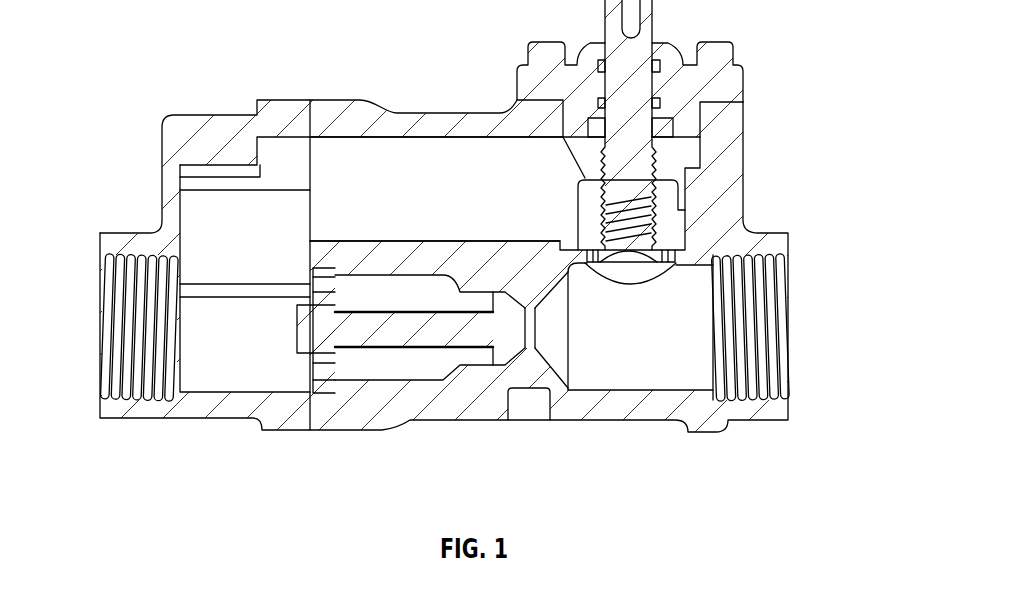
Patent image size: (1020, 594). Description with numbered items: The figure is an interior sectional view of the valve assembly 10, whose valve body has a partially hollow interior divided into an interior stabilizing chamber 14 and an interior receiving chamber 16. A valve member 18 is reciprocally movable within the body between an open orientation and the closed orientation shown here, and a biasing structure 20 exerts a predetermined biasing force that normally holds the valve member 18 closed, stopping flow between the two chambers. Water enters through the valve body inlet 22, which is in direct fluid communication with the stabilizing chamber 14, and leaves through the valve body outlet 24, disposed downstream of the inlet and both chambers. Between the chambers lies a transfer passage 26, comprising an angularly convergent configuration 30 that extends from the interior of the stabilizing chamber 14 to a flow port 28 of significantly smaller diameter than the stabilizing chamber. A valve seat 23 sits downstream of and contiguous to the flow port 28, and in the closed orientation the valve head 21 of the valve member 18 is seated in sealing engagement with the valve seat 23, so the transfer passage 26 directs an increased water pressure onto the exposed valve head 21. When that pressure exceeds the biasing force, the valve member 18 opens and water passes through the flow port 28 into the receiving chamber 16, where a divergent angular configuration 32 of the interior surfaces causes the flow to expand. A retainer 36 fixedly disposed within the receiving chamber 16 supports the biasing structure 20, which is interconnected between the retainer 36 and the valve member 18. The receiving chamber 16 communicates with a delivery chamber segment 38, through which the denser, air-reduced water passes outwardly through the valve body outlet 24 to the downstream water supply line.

The valve assembly 10 is at (866, 92).
The interior stabilizing chamber 14 is at (657, 363).
The interior receiving chamber 16 is at (397, 368).
The valve member 18 is at (417, 327).
The biasing structure 20 is at (362, 323).
The valve head 21 is at (500, 343).
The valve body inlet 22 is at (787, 330).
The valve seat 23 is at (517, 357).
The valve body outlet 24 is at (112, 316).
The transfer passage 26 is at (553, 347).
The flow port 28 is at (528, 321).
The angularly convergent configuration 30 is at (545, 360).
The divergent angular configuration 32 is at (483, 249).
The retainer 36 is at (318, 375).
The delivery chamber segment 38 is at (207, 352).